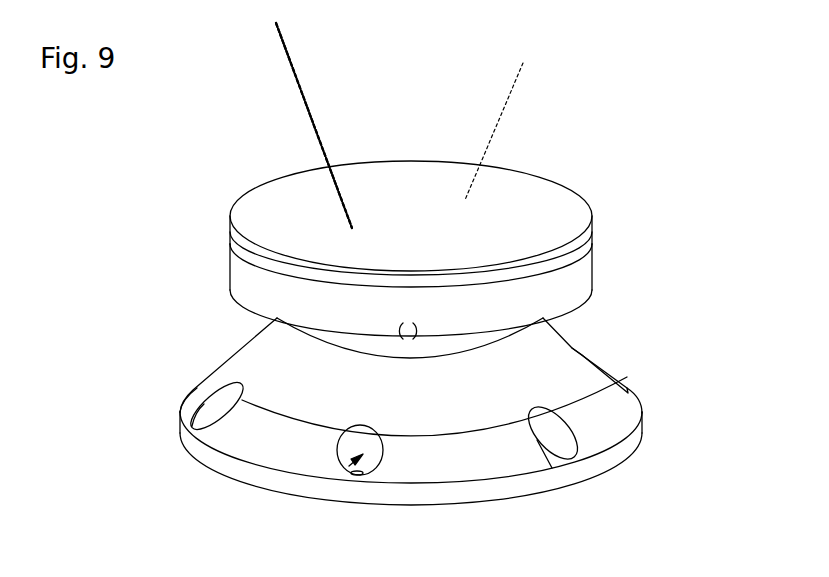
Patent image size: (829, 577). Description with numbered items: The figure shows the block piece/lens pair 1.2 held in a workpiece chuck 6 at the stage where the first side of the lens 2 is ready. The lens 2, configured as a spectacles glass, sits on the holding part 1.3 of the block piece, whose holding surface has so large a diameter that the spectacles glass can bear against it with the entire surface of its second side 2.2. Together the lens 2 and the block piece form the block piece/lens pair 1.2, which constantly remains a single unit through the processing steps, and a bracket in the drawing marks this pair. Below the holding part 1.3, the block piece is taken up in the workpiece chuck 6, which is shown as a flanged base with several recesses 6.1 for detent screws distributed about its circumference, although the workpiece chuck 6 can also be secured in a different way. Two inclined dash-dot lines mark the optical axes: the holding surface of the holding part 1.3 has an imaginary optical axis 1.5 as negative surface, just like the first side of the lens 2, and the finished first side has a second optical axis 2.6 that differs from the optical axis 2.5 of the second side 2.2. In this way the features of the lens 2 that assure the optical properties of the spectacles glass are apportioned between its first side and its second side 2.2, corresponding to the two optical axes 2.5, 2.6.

The block piece/lens pair 1.2 is at (402, 238).
The holding part 1.3 is at (268, 288).
The imaginary optical axis 1.5 is at (293, 70).
The lens 2 is at (231, 236).
The second side 2.2 is at (534, 182).
The optical axis 2.5 is at (302, 92).
The second optical axis 2.6 is at (503, 110).
The workpiece chuck 6 is at (277, 448).
The recesses 6.1 is at (343, 470).